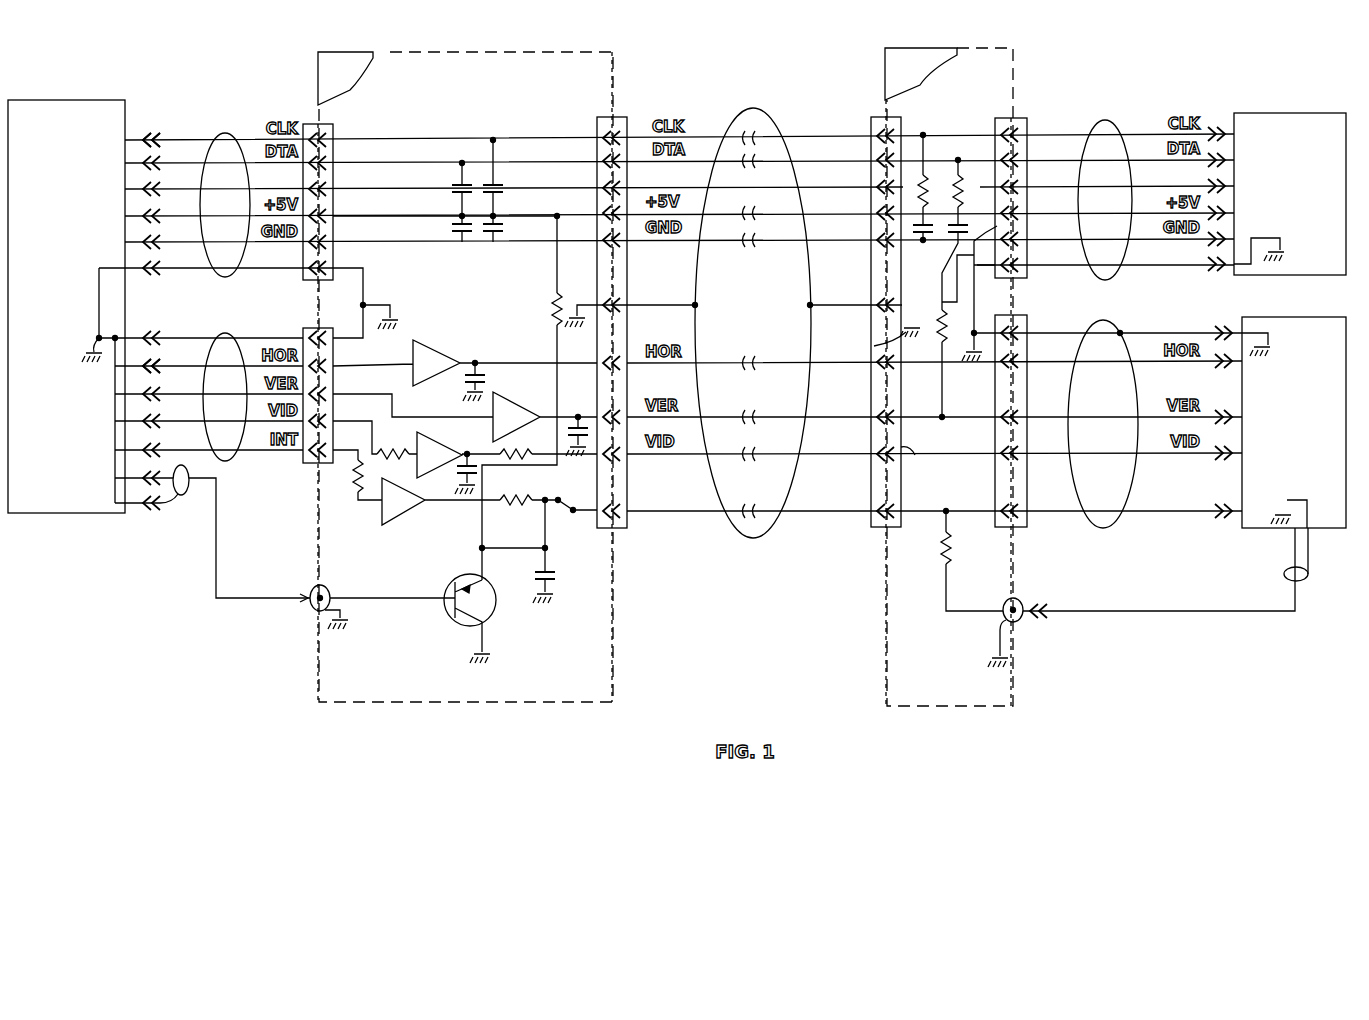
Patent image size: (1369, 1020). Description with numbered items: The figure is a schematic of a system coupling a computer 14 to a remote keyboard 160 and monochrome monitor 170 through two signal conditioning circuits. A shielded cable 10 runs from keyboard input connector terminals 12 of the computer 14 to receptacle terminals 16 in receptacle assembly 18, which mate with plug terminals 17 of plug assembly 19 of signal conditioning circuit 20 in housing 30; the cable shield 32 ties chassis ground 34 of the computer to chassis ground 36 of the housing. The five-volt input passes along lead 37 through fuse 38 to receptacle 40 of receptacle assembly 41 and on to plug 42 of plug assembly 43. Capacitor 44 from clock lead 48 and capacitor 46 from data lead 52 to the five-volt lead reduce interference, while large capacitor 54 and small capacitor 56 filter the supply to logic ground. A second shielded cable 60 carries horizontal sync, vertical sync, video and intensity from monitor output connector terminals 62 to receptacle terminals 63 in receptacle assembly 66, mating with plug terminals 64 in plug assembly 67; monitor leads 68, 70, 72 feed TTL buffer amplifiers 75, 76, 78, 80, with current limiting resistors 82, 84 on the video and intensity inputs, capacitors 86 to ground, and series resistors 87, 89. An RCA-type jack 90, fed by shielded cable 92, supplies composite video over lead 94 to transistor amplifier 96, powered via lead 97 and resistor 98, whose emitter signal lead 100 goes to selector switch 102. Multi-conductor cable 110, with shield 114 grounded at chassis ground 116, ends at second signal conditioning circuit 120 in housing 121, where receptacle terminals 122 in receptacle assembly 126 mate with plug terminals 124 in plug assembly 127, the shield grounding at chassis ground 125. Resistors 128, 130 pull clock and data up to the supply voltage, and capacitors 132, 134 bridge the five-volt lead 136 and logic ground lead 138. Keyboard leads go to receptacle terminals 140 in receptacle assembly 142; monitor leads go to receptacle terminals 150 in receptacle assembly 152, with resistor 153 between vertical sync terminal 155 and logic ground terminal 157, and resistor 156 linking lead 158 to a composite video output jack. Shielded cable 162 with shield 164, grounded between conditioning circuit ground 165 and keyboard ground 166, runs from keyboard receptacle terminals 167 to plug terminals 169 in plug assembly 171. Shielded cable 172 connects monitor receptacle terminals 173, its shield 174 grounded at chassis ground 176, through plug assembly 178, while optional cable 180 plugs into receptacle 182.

The shielded cable 10 is at (228, 105).
The keyboard input connector terminals 12 is at (159, 127).
The computer 14 is at (46, 164).
The receptacle terminals 16 is at (310, 128).
The plug terminals 17 is at (333, 214).
The receptacle assembly 18 is at (318, 124).
The plug assembly 19 is at (322, 120).
The signal conditioning circuit 20 is at (456, 106).
The housing 30 is at (338, 50).
The cable shield 32 is at (225, 133).
The chassis ground 34 is at (99, 338).
The chassis ground 36 is at (393, 305).
The +5-volt lead 37 is at (373, 215).
The fuse 38 is at (410, 216).
The receptacle 40 is at (597, 205).
The receptacle assembly 41 is at (605, 117).
The plug 42 is at (622, 120).
The plug assembly 43 is at (627, 120).
The capacitor 44 is at (505, 186).
The capacitor 46 is at (455, 186).
The clock lead 48 is at (445, 140).
The data lead 52 is at (442, 163).
The capacitor 54 is at (452, 226).
The capacitor 56 is at (504, 226).
The second shielded cable 60 is at (236, 325).
The monitor output connector terminals 62 is at (162, 327).
The receptacle terminals 63 is at (312, 330).
The plug terminals 64 is at (335, 366).
The receptacle assembly 66 is at (310, 463).
The plug assembly 67 is at (325, 463).
The monitor lead 68 is at (393, 366).
The monitor lead 70 is at (378, 394).
The monitor lead 72 is at (352, 421).
The buffer amplifier 75 is at (440, 360).
The buffer amplifier 76 is at (512, 400).
The buffer amplifier 78 is at (445, 449).
The intensity amplifier 80 is at (405, 512).
The current limiting resistor 82 is at (393, 452).
The current limiting resistor 84 is at (358, 460).
The capacitors 86 is at (466, 390).
The resistor 87 is at (515, 453).
The resistor 89 is at (515, 499).
The RCA-type jack 90 is at (331, 592).
The shielded cable 92 is at (187, 468).
The lead 94 is at (393, 598).
The transistor amplifier 96 is at (492, 615).
The lead 97 is at (482, 548).
The resistor 98 is at (551, 306).
The signal lead 100 is at (548, 542).
The selector switch 102 is at (573, 510).
The shielded multi-conductor cable 110 is at (760, 102).
The shield 114 is at (716, 130).
The chassis ground 116 is at (577, 305).
The second signal conditioning circuit 120 is at (934, 104).
The housing 121 is at (917, 48).
The receptacle terminals 122 is at (872, 136).
The plug terminals 124 is at (906, 132).
The chassis ground 125 is at (875, 346).
The receptacle assembly 126 is at (875, 117).
The plug assembly 127 is at (915, 455).
The resistor 128 is at (921, 190).
The resistor 130 is at (958, 175).
The capacitor 132 is at (934, 243).
The capacitor 134 is at (946, 267).
The +5 volt lead 136 is at (348, 624).
The logic ground lead 138 is at (834, 240).
The receptacle terminals 140 is at (998, 126).
The receptacle assembly 142 is at (1015, 120).
The receptacle terminals 150 is at (998, 412).
The receptacle assembly 152 is at (1015, 550).
The resistor 153 is at (942, 318).
The vertical sync terminal 155 is at (942, 420).
The resistor 156 is at (940, 556).
The logic ground terminal 157 is at (1028, 236).
The lead 158 is at (950, 516).
The keyboard 160 is at (1281, 161).
The shielded cable 162 is at (1136, 121).
The shield 164 is at (1104, 122).
The conditioning circuit ground 165 is at (975, 664).
The keyboard ground 166 is at (1290, 252).
The keyboard receptacle terminals 167 is at (1216, 122).
The plug terminals 169 is at (1028, 136).
The monochrome monitor 170 is at (1281, 384).
The plug assembly 171 is at (1025, 120).
The shielded cable 172 is at (1145, 528).
The receptacle terminals 173 is at (1212, 335).
The shield 174 is at (1108, 530).
The chassis ground 176 is at (1028, 346).
The plug assembly 178 is at (1028, 318).
The single lead shielded cable 180 is at (1199, 611).
The receptacle 182 is at (1000, 624).